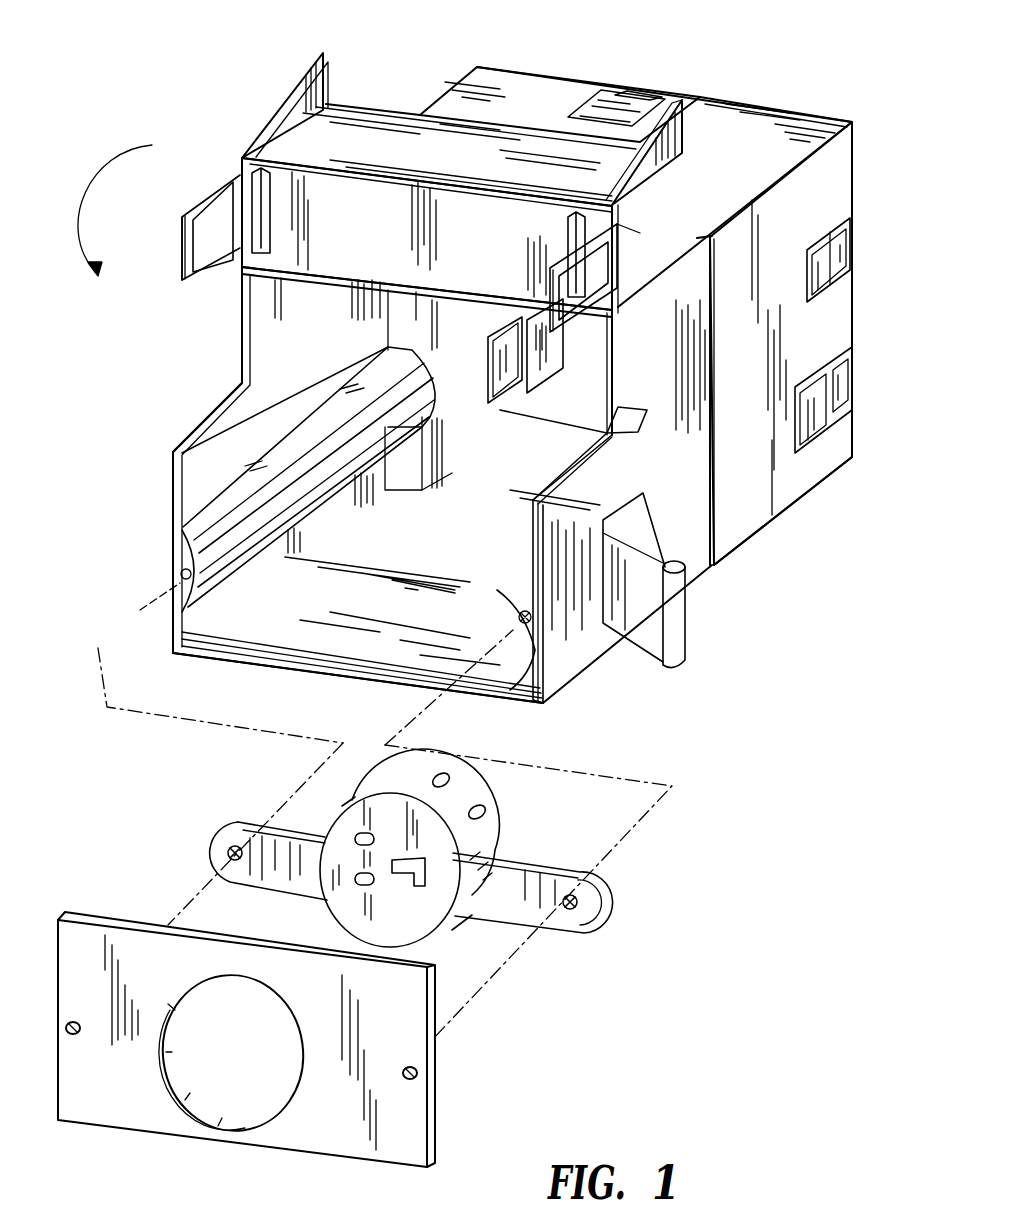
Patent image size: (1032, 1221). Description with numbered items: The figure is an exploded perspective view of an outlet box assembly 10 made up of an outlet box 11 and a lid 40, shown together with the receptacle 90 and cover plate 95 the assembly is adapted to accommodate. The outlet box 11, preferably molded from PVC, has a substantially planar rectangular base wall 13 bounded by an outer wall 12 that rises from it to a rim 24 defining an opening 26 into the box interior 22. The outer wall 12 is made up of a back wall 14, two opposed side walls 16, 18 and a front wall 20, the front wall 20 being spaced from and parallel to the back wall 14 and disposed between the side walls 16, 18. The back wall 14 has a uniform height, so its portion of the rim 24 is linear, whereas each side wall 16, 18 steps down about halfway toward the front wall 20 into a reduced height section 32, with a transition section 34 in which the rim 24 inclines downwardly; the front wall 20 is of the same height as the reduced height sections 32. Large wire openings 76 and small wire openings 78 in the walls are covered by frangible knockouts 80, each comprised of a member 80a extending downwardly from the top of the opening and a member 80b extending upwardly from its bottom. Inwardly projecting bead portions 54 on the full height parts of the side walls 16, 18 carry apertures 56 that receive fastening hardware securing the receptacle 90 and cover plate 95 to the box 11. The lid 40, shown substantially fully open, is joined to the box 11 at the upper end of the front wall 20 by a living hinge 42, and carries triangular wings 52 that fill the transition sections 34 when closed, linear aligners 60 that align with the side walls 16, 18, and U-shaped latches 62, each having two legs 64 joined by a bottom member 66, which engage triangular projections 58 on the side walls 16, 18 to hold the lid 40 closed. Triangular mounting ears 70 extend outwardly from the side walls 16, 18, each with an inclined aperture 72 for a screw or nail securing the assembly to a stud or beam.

The outlet box assembly 10 is at (212, 93).
The outlet box 11 is at (505, 43).
The outer wall 12 is at (467, 100).
The base wall 13 is at (733, 98).
The back wall 14 is at (408, 687).
The side wall 16 is at (197, 470).
The side wall 18 is at (700, 570).
The front wall 20 is at (802, 123).
The box interior 22 is at (587, 427).
The rim 24 is at (547, 670).
The opening 26 is at (483, 500).
The reduced height section 32 is at (685, 332).
The transition section 34 is at (215, 412).
The lid 40 is at (340, 103).
The living hinge 42 is at (513, 305).
The wing 52 is at (303, 70).
The bead portion 54 is at (180, 610).
The aperture 56 is at (180, 578).
The triangular-shaped projection 58 is at (633, 423).
The linear aligner 60 is at (242, 162).
The latch 62 is at (220, 180).
The leg 64 is at (180, 232).
The bottom member 66 is at (188, 212).
The mounting ear 70 is at (640, 520).
The aperture 72 is at (663, 573).
The large wire opening 76 is at (850, 413).
The small wire opening 78 is at (852, 222).
The knockout 80 is at (497, 355).
The frangible member 80a is at (593, 113).
The frangible member 80b is at (620, 90).
The receptacle 90 is at (202, 820).
The cover plate 95 is at (413, 1133).